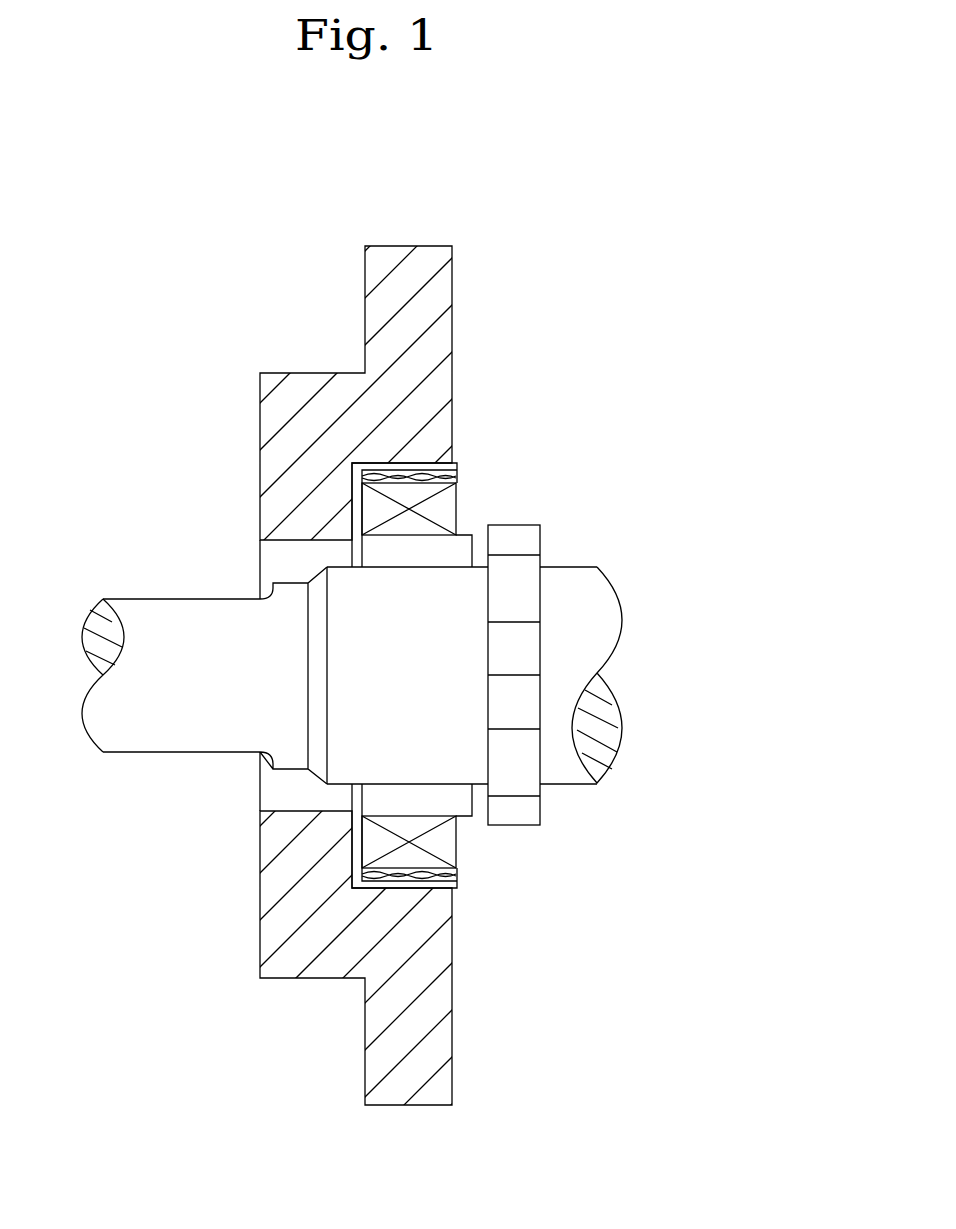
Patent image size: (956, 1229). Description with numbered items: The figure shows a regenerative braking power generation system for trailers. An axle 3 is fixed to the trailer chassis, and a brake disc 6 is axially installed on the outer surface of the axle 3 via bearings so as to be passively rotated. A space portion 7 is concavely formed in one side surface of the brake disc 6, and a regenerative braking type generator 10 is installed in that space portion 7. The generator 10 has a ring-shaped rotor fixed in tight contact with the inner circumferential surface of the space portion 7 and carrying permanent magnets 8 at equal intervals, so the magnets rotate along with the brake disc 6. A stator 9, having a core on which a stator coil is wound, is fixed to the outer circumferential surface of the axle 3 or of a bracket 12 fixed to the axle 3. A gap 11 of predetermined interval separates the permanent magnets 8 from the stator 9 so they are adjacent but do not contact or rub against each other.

The axle 3 is at (593, 652).
The brake disc 6 is at (403, 246).
The space portion 7 is at (352, 520).
The permanent magnets 8 is at (460, 468).
The stator 9 is at (448, 512).
The regenerative braking type generator 10 is at (496, 678).
The gap 11 is at (353, 477).
The bracket 12 is at (378, 549).